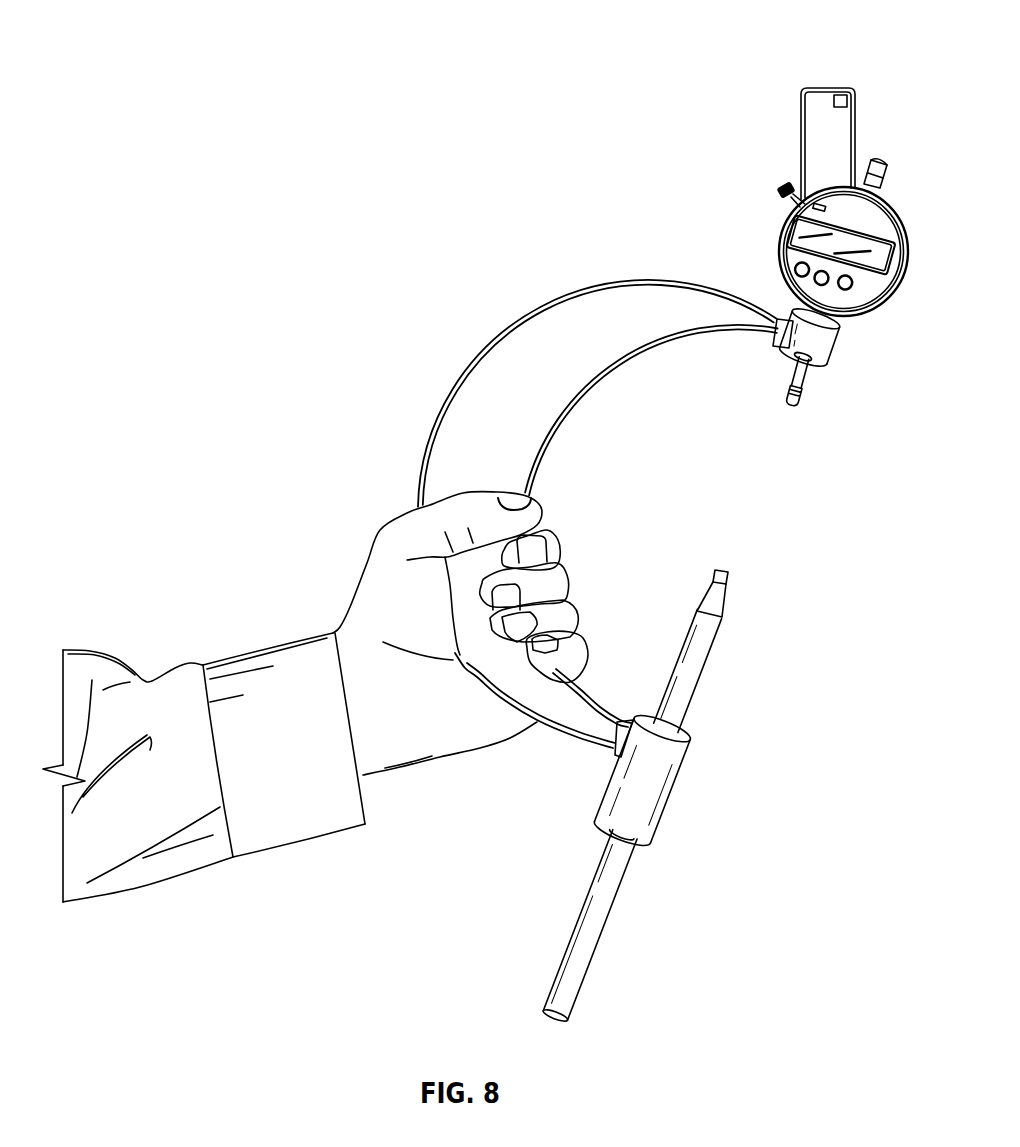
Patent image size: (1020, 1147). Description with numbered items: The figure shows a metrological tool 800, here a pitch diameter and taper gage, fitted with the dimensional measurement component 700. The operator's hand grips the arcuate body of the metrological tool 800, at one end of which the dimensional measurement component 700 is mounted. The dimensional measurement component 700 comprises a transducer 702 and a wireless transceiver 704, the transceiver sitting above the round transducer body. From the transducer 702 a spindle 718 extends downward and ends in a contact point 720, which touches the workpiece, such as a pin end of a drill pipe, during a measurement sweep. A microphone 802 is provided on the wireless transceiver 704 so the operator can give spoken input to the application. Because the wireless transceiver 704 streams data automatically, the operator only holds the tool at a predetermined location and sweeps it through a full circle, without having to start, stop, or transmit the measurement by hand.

The dimensional measurement component 700 is at (752, 136).
The transducer 702 is at (795, 259).
The wireless transceiver 704 is at (822, 102).
The spindle 718 is at (804, 369).
The contact point 720 is at (791, 407).
The metrological tool 800 is at (536, 365).
The microphone 802 is at (843, 100).